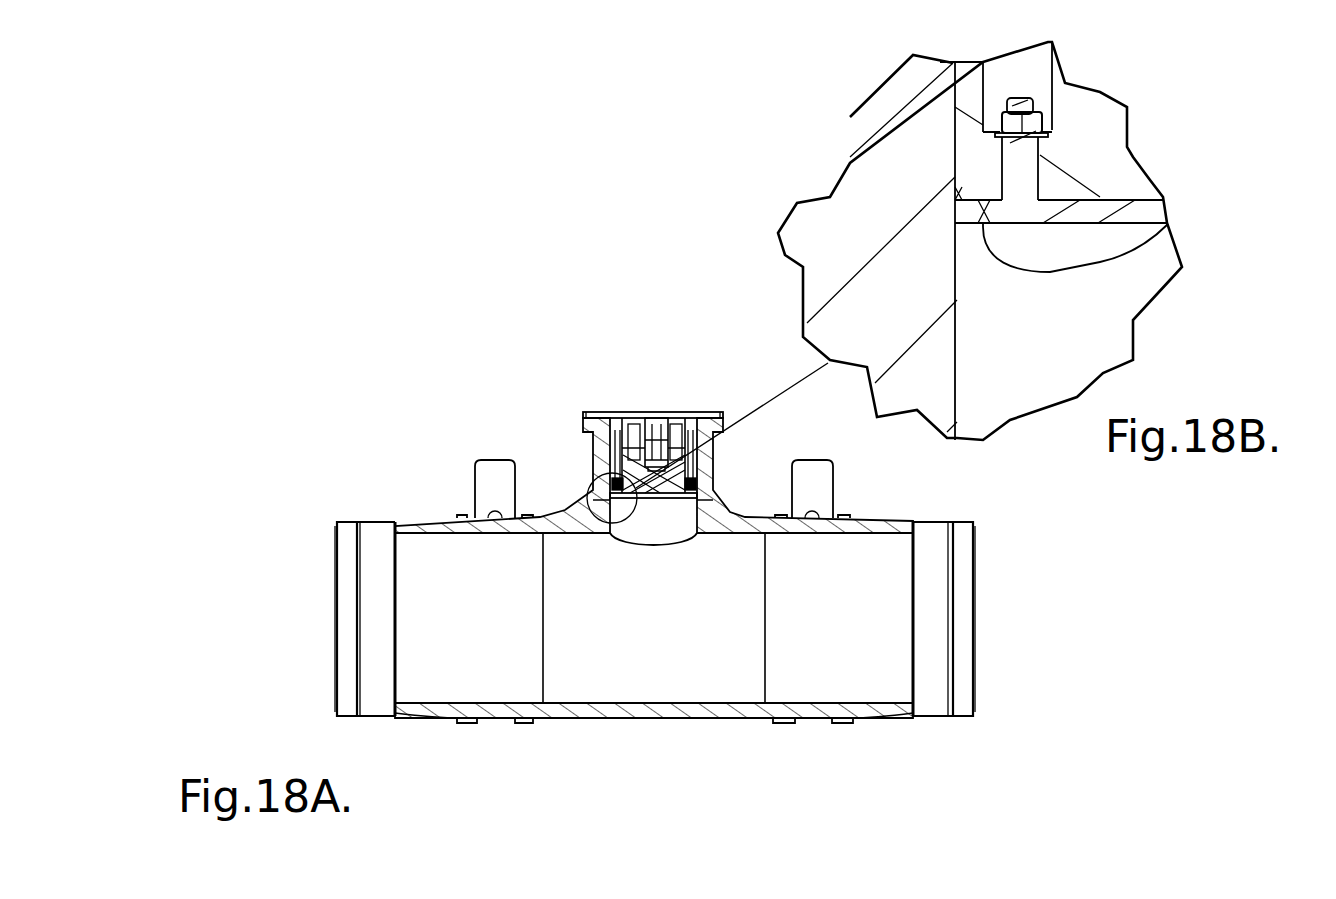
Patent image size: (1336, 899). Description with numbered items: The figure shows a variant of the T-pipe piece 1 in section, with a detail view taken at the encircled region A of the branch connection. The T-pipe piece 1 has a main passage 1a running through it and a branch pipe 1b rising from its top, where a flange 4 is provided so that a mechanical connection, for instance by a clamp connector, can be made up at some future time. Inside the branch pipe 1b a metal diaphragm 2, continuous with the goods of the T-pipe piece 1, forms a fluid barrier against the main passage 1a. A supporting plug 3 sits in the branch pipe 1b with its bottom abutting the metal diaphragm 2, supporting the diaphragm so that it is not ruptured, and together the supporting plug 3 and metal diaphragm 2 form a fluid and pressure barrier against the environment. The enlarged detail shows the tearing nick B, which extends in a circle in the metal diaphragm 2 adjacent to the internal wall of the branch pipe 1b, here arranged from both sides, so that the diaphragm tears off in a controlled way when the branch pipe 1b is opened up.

In FIG. 18A, the T-pipe piece 1 is at (352, 381).
In FIG. 18A, the main passage 1a is at (735, 713).
In FIG. 18A, the branch pipe 1b is at (593, 460).
In FIG. 18B, the branch pipe 1b is at (890, 130).
In FIG. 18A, the metal diaphragm 2 is at (715, 495).
In FIG. 18B, the metal diaphragm 2 is at (1120, 212).
In FIG. 18A, the supporting plug 3 is at (712, 463).
In FIG. 18A, the flange 4 is at (722, 428).
In FIG. 18A, the detail section A is at (590, 489).
In FIG. 18B, the tearing nick B is at (1168, 226).